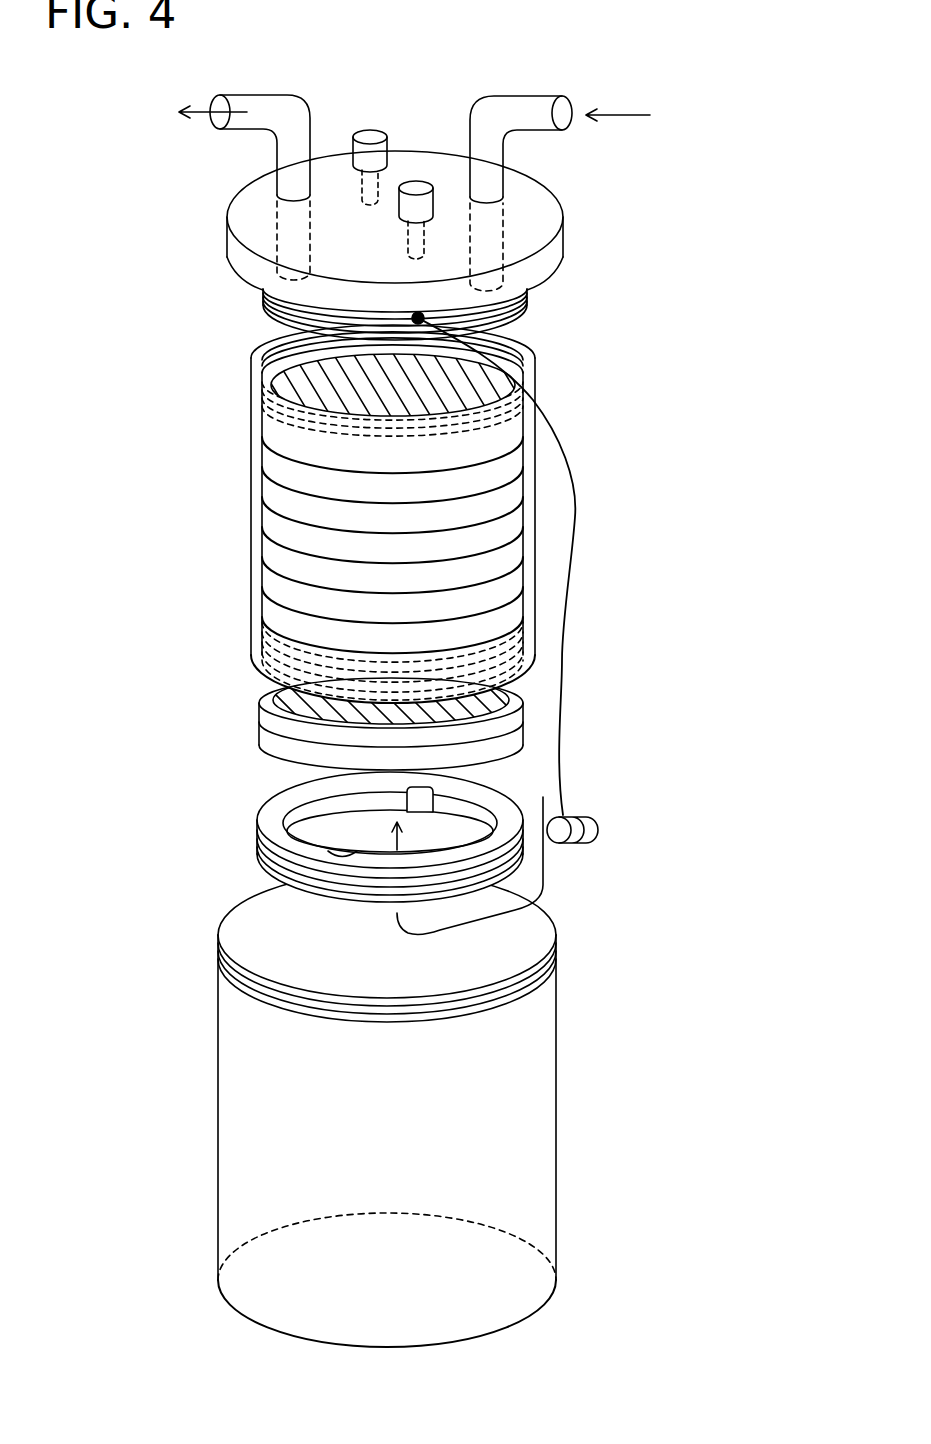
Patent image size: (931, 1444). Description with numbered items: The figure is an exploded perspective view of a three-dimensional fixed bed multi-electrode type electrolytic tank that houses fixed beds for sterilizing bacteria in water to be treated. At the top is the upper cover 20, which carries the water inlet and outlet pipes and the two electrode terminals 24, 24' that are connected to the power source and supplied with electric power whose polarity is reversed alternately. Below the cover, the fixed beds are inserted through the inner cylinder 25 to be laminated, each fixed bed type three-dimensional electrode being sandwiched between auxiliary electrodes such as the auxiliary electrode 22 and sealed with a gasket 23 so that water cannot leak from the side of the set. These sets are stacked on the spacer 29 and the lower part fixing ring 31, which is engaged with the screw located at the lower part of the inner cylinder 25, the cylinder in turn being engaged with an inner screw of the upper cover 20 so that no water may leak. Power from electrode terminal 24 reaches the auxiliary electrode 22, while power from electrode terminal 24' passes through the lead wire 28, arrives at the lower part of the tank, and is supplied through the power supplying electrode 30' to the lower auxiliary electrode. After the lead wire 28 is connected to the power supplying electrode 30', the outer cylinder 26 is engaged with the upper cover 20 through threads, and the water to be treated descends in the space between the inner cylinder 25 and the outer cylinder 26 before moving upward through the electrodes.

The upper cover 20 is at (558, 242).
The auxiliary electrode 22 is at (292, 370).
The gasket 23 is at (270, 537).
The electrode terminal 24 is at (357, 139).
The electrode terminal 24' is at (423, 182).
The inner cylinder 25 is at (256, 455).
The outer cylinder 26 is at (522, 1104).
The lead wire 28 is at (574, 482).
The spacer 29 is at (268, 722).
The power supplying electrode 30' is at (392, 737).
The lower part fixing ring 31 is at (268, 821).